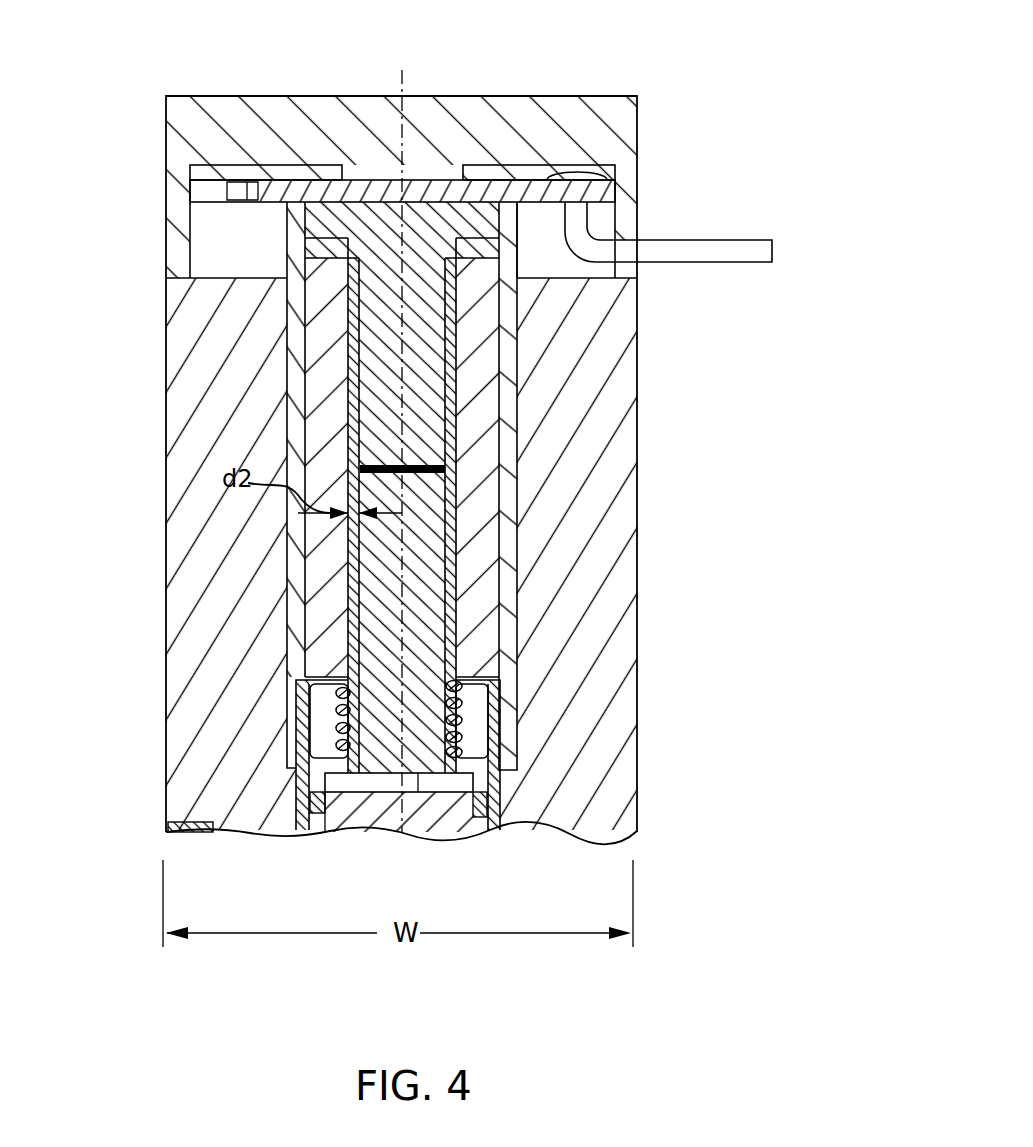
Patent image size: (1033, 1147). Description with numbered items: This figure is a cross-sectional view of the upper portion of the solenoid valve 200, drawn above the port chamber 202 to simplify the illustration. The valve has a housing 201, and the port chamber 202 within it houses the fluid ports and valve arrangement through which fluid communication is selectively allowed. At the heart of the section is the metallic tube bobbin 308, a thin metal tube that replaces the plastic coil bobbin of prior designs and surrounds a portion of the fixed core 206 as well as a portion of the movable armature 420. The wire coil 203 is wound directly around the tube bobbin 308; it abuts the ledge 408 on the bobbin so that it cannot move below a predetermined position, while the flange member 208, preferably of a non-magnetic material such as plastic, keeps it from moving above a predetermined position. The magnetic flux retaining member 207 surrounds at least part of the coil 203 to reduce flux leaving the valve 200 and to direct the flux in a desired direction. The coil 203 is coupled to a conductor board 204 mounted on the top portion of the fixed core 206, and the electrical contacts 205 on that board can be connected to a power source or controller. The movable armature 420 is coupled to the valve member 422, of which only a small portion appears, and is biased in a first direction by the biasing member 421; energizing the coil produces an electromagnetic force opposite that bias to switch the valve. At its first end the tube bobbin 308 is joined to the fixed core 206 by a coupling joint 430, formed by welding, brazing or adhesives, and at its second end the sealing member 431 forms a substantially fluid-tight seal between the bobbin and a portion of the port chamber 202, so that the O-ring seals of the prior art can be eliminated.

The solenoid valve 200 is at (728, 86).
The housing 201 is at (630, 445).
The port chamber 202 is at (333, 842).
The wire coil 203 is at (490, 568).
The conductor board 204 is at (312, 190).
The electrical contacts 205 is at (730, 238).
The fixed core 206 is at (450, 203).
The magnetic flux retaining member 207 is at (296, 377).
The flange member 208 is at (317, 246).
The metallic tube bobbin 308 is at (450, 380).
The ledge 408 is at (470, 678).
The movable armature 420 is at (433, 762).
The biasing member 421 is at (462, 712).
The valve member 422 is at (388, 783).
The coupling joint 430 is at (358, 245).
The sealing member 431 is at (495, 812).